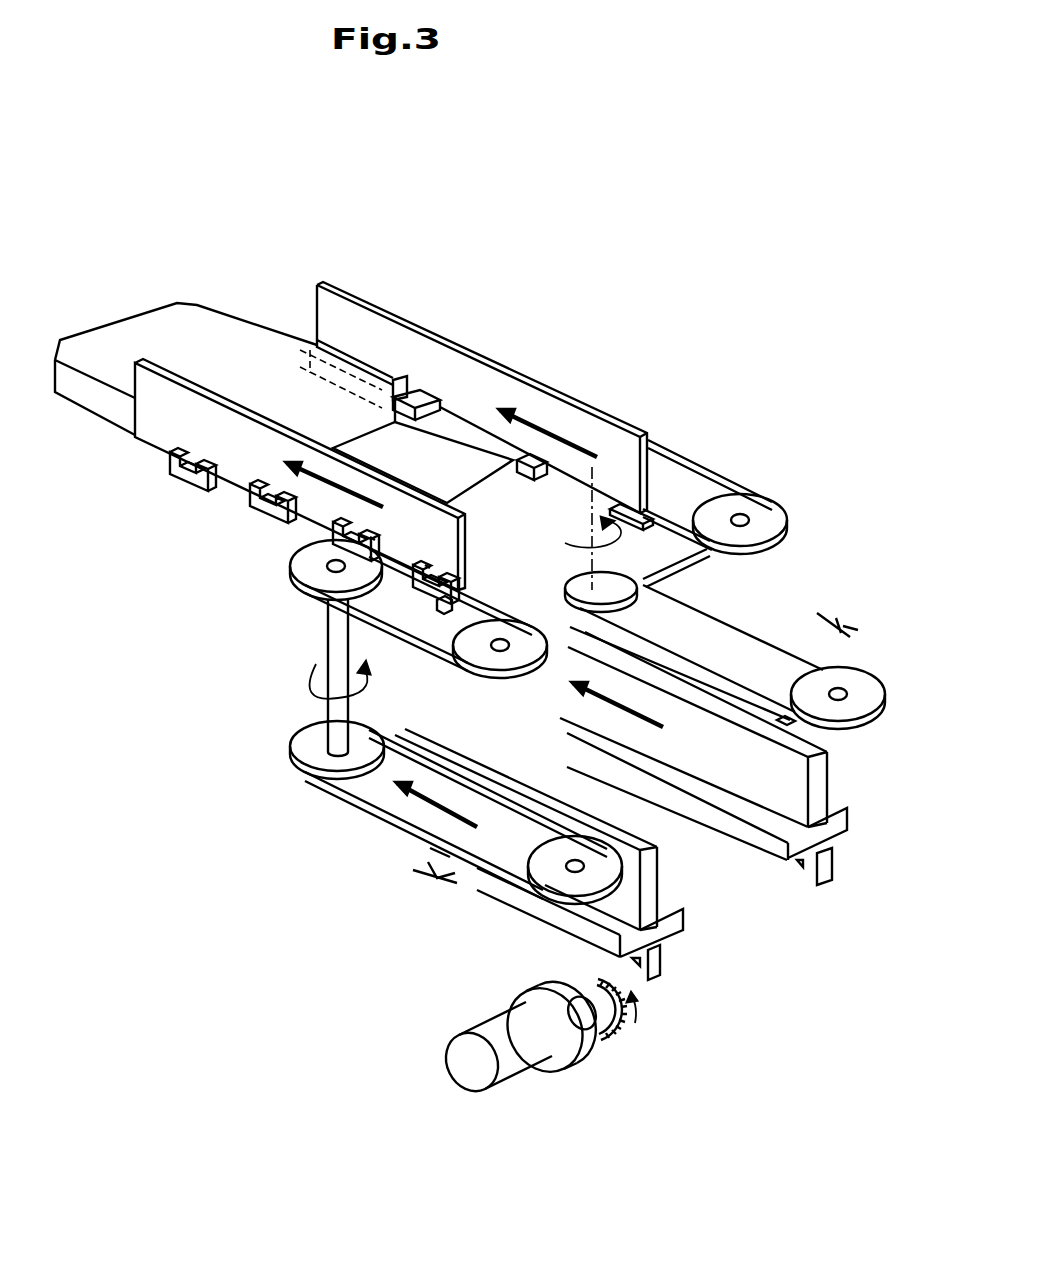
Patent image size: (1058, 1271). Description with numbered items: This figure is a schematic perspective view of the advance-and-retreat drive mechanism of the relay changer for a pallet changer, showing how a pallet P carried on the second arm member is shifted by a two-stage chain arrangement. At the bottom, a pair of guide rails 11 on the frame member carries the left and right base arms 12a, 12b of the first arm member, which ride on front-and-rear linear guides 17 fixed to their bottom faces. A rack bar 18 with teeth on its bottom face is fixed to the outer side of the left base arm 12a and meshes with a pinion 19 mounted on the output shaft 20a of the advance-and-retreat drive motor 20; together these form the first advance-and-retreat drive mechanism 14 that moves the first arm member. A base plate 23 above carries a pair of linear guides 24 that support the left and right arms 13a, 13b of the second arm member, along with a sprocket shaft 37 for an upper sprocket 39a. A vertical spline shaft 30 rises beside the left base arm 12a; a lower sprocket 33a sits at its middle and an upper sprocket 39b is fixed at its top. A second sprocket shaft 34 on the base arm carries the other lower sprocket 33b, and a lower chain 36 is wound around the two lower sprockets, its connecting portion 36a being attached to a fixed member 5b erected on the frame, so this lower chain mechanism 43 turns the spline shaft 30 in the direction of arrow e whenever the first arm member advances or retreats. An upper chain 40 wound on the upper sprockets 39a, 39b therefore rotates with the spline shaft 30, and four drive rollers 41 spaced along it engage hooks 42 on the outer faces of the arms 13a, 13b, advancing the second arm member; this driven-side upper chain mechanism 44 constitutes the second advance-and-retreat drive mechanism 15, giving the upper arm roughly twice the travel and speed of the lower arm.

The pallet P is at (200, 300).
The left arm of second arm member 13a is at (160, 438).
The right arm of second arm member 13b is at (415, 337).
The hooks 42 is at (247, 503).
The drive rollers 41 is at (427, 567).
The base plate 23 is at (483, 497).
The linear guides 24 is at (533, 470).
The upper chain 40 is at (710, 470).
The upper chain mechanism 44 is at (693, 450).
The upper sprocket 39a is at (780, 510).
The upper sprocket 39b is at (293, 577).
The sprocket shaft 37 is at (500, 653).
The spline shaft 30 is at (327, 628).
The rotation direction arrow e is at (307, 677).
The second advance-and-retreat drive mechanism 15 is at (802, 537).
The lower sprocket 33a is at (293, 762).
The lower sprocket 33b is at (900, 667).
The lower chain 36 is at (727, 607).
The connecting portion 36a is at (440, 850).
The lower chain mechanism 43 is at (775, 625).
The fixed member 5b is at (833, 628).
The left base arm 12a is at (660, 890).
The right base arm 12b is at (827, 787).
The linear guides 17 is at (843, 853).
The sprocket shaft 34 is at (480, 917).
The rack bar 18 is at (547, 947).
The guide rails 11 is at (827, 888).
The advance-and-retreat drive motor 20 is at (513, 1080).
The output shaft 20a is at (590, 1030).
The pinion 19 is at (620, 1027).
The first advance-and-retreat drive mechanism 14 is at (658, 1036).